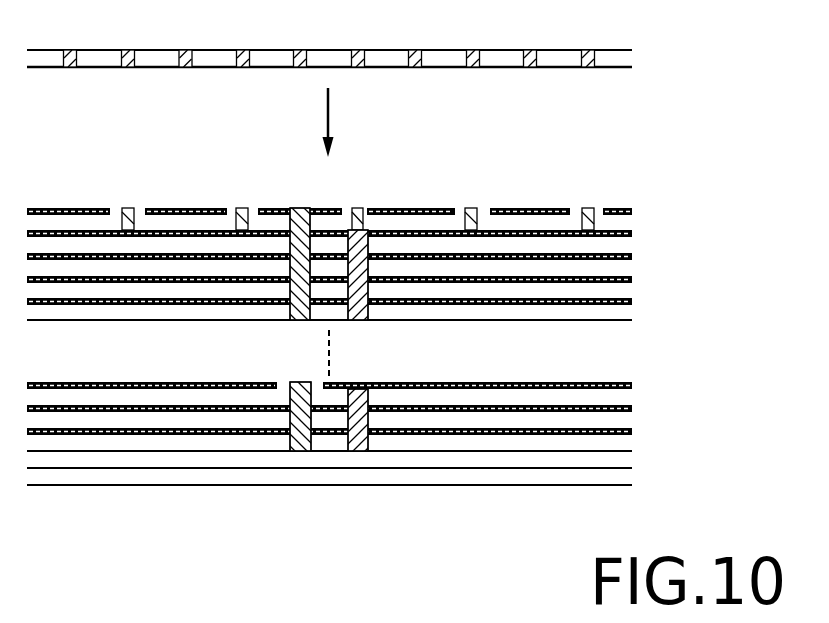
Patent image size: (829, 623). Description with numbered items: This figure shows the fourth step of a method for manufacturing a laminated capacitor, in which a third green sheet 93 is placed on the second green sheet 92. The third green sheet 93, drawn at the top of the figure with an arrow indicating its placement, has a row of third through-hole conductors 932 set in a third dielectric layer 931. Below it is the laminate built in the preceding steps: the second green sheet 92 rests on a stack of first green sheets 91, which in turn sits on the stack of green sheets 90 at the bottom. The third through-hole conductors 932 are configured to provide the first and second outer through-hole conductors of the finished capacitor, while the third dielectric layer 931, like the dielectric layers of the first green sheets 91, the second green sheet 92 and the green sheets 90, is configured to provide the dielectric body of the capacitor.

The green sheets 90 is at (634, 479).
The first green sheets 91 is at (633, 313).
The second green sheet 92 is at (636, 222).
The third green sheet 93 is at (358, 56).
The third dielectric layer 931 is at (105, 62).
The third through-hole conductors 932 is at (587, 49).